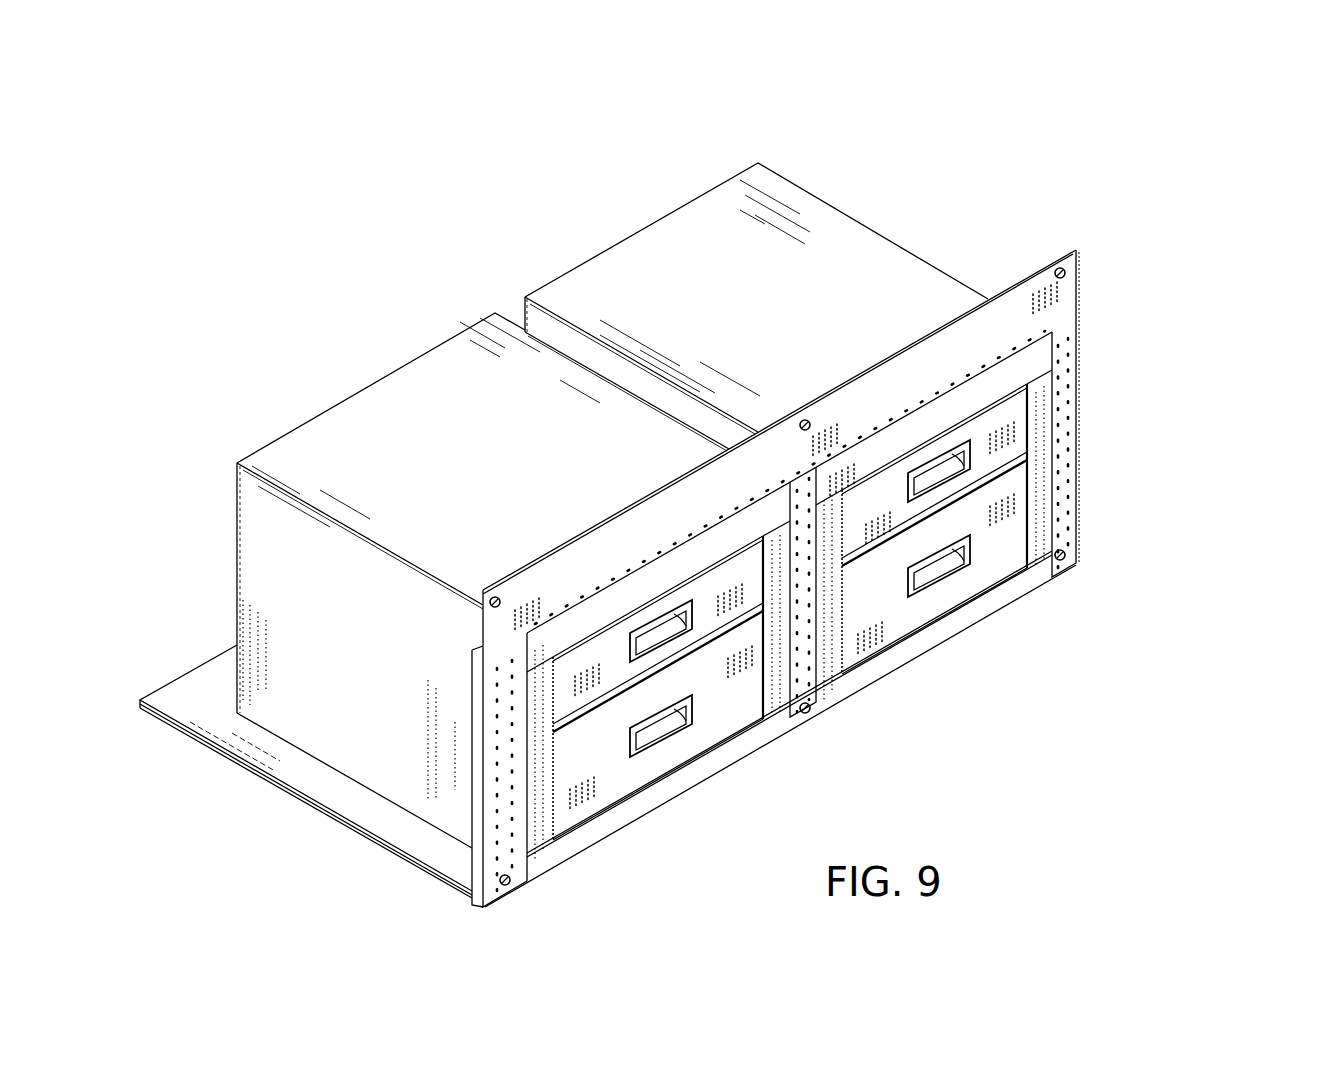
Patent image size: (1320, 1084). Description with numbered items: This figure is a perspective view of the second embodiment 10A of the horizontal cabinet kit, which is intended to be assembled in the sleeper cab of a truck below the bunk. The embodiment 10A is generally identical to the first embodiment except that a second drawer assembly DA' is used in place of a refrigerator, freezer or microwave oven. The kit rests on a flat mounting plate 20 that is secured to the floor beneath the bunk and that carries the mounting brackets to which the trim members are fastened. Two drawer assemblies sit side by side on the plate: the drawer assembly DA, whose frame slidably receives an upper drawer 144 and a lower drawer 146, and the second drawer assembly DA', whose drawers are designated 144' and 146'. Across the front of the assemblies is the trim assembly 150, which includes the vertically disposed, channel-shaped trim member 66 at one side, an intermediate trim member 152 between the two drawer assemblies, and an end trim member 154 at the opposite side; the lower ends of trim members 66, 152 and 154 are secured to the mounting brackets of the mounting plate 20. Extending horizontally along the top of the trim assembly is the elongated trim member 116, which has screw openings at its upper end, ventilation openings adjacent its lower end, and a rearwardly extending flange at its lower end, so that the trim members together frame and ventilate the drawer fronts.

The second embodiment of horizontal cabinet kit 10A is at (963, 232).
The mounting plate 20 is at (332, 804).
The trim member 66 is at (522, 795).
The trim member 116 is at (972, 342).
The drawer 144 is at (737, 703).
The drawer 144' is at (1032, 484).
The drawer 146 is at (702, 743).
The drawer 146' is at (982, 611).
The trim assembly 150 is at (869, 547).
The intermediate trim member 152 is at (798, 650).
The end trim member 154 is at (1068, 472).
The drawer assembly DA is at (662, 818).
The second drawer assembly DA' is at (953, 685).